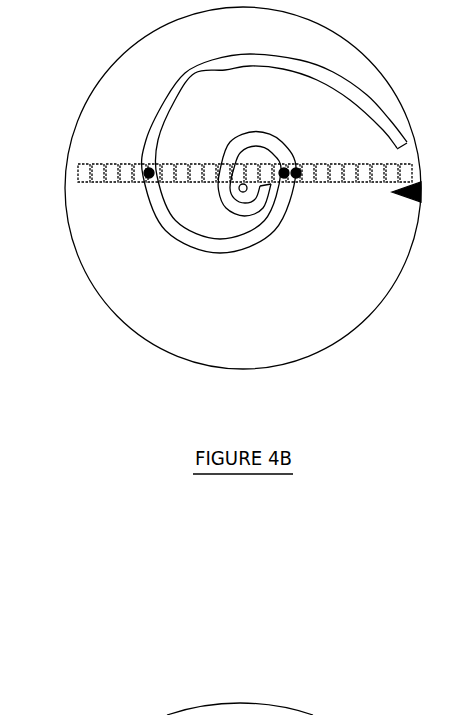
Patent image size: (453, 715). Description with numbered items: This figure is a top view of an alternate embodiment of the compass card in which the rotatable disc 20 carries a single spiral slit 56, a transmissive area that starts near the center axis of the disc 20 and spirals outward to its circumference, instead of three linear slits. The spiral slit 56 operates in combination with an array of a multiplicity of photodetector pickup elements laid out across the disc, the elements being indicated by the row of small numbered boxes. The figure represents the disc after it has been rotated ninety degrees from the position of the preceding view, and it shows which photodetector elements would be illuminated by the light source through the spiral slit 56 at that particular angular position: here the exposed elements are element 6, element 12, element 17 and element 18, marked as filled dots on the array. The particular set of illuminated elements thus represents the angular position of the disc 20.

The disk 20 is at (168, 338).
The spiral slit 56 is at (213, 66).
The array element 12 is at (96, 163).
The array element 6 is at (146, 167).
The array element 17 is at (288, 166).
The array element 18 is at (302, 166).